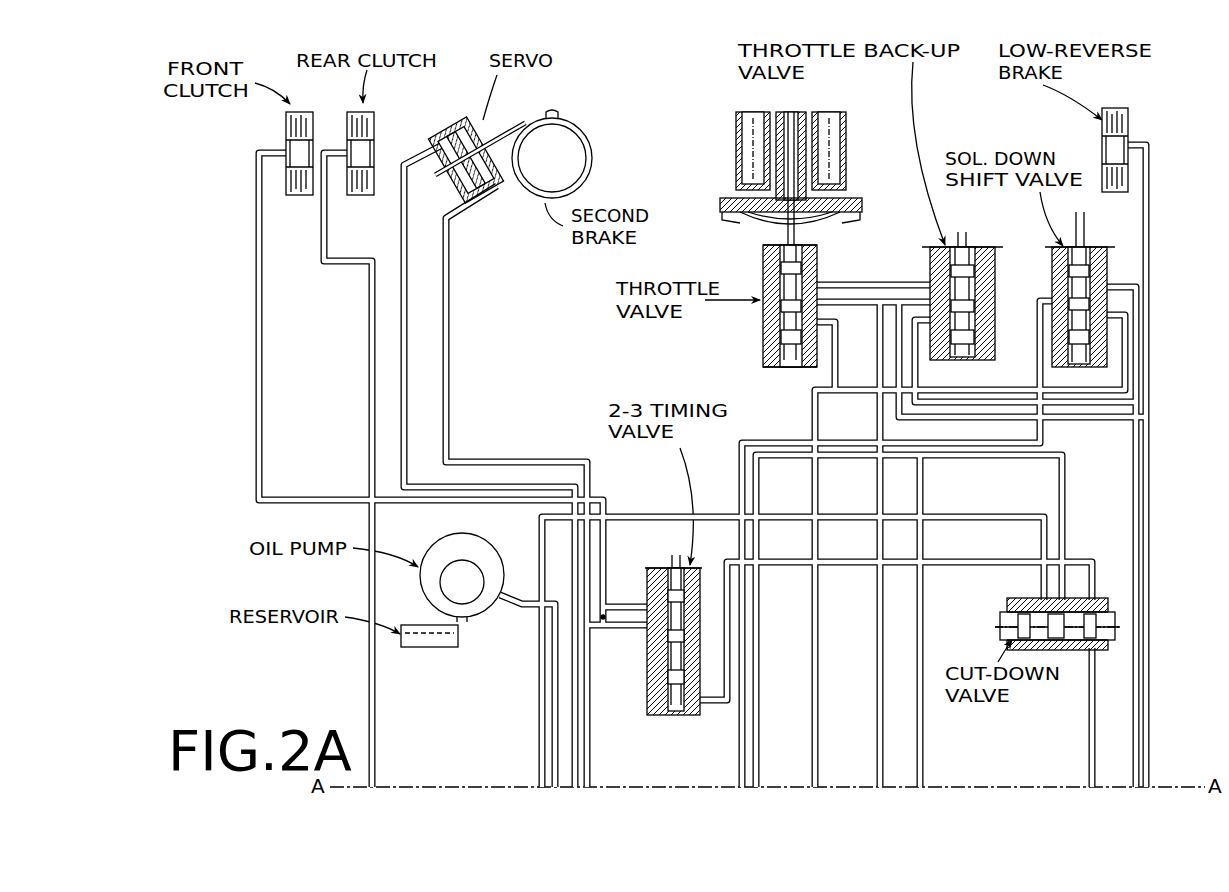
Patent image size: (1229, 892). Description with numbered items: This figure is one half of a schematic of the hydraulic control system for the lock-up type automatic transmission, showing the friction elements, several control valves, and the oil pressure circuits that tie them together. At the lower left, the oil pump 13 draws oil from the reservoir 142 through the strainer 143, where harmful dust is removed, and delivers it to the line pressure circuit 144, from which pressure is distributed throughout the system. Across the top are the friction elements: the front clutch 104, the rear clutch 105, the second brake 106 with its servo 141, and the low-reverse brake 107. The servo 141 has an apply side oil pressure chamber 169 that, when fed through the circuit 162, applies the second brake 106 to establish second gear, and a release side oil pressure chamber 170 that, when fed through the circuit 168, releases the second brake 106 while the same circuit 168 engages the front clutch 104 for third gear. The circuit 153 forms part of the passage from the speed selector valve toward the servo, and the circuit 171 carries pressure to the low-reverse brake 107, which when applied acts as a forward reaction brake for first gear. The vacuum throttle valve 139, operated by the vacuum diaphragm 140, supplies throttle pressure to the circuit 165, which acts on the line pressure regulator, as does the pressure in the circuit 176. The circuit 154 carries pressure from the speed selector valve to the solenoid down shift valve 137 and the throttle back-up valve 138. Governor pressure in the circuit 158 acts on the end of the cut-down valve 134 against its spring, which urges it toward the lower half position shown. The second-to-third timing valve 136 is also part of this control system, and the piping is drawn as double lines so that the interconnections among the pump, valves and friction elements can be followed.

The oil pump 13 is at (440, 540).
The front clutch 104 is at (283, 142).
The rear clutch 105 is at (350, 131).
The second brake 106 is at (627, 111).
The low-reverse brake 107 is at (1178, 136).
The cut-down valve 134 is at (1108, 600).
The 2-3 timing valve 136 is at (660, 690).
The solenoid down shift valve 137 is at (1137, 227).
The throttle back-up valve 138 is at (1015, 228).
The vacuum throttle valve 139 is at (865, 246).
The vacuum diaphragm 140 is at (846, 166).
The servo 141 is at (478, 158).
The reservoir 142 is at (432, 638).
The strainer 143 is at (422, 624).
The line pressure circuit 144 is at (523, 606).
The circuit 153 is at (370, 374).
The circuit 154 is at (1130, 285).
The circuit 158 is at (1090, 764).
The circuit 162 is at (402, 224).
The circuit 165 is at (878, 425).
The circuit 168 is at (259, 226).
The apply side oil pressure chamber 169 is at (448, 140).
The release side oil pressure chamber 170 is at (491, 186).
The circuit 171 is at (1149, 267).
The circuit 176 is at (605, 530).